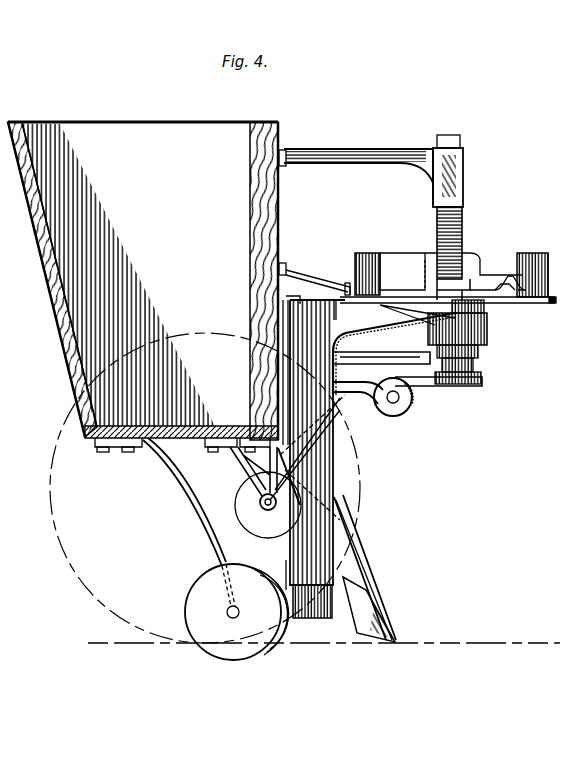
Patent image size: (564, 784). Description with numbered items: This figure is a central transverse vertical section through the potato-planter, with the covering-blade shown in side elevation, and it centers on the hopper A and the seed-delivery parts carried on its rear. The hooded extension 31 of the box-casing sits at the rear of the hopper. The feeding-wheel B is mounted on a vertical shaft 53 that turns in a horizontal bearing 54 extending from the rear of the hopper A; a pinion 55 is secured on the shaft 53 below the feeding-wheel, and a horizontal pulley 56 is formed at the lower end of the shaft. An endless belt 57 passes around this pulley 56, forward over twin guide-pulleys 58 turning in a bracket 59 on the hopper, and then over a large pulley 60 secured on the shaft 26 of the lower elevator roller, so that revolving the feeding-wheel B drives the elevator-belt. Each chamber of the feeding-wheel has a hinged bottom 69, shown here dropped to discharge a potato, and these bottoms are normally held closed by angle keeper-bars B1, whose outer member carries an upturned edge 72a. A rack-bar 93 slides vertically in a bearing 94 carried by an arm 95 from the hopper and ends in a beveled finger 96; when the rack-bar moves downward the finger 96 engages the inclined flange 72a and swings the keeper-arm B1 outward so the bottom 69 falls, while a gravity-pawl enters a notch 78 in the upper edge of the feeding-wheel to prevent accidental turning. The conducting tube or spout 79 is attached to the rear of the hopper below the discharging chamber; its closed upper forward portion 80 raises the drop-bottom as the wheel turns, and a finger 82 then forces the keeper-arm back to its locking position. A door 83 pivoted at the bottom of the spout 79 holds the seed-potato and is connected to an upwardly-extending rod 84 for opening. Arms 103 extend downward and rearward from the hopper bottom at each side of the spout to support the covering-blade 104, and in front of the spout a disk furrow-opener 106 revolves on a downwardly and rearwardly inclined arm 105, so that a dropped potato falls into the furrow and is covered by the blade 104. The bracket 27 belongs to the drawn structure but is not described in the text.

The hopper A is at (250, 152).
The feeding-wheel B is at (496, 253).
The angle keeper-bar B1 is at (552, 304).
The shaft 26 is at (260, 515).
The bracket 27 is at (243, 440).
The hooded extension 31 is at (394, 354).
The vertical shaft 53 is at (486, 306).
The horizontal bearing 54 is at (410, 362).
The pinion 55 is at (489, 332).
The horizontal pulley 56 is at (482, 376).
The endless belt 57 is at (426, 387).
The twin guide-pulleys 58 is at (392, 417).
The bracket 59 is at (378, 382).
The large pulley 60 is at (236, 500).
The bottom 69 is at (400, 312).
The upturned edge 72a is at (502, 294).
The notch 78 is at (377, 258).
The conducting tube or spout 79 is at (350, 522).
The closed upper forward portion 80 is at (315, 295).
The finger 82 is at (323, 290).
The door 83 is at (307, 459).
The rod 84 is at (286, 568).
The rack-bar 93 is at (463, 216).
The bearing 94 is at (464, 176).
The arm 95 is at (383, 149).
The finger 96 is at (474, 297).
The arm 103 is at (358, 565).
The covering-blade 104 is at (390, 626).
The arm 105 is at (200, 510).
The furrow-opener 106 is at (192, 645).